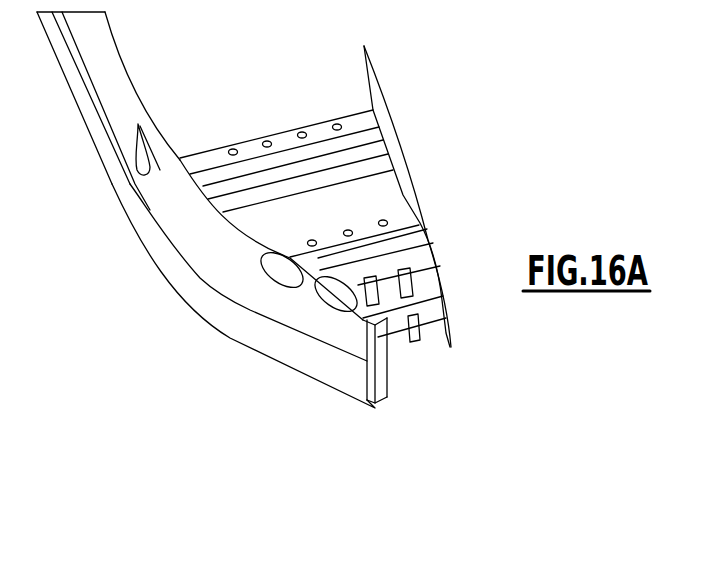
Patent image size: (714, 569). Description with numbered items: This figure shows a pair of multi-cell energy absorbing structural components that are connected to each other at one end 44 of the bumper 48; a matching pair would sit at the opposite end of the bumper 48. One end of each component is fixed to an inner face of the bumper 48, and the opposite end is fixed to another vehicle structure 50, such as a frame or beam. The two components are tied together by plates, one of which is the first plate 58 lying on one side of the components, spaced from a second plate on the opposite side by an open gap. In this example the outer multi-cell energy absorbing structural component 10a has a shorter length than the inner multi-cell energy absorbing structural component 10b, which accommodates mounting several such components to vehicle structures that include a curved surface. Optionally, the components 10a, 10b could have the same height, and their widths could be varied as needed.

The bumper 48 is at (120, 93).
The end of the bumper 44 is at (257, 333).
The inner multi-cell energy absorbing structural component 10b is at (282, 142).
The first plate 58 is at (358, 212).
The vehicle structure 50 is at (383, 90).
The outer multi-cell energy absorbing structural component 10a is at (411, 327).